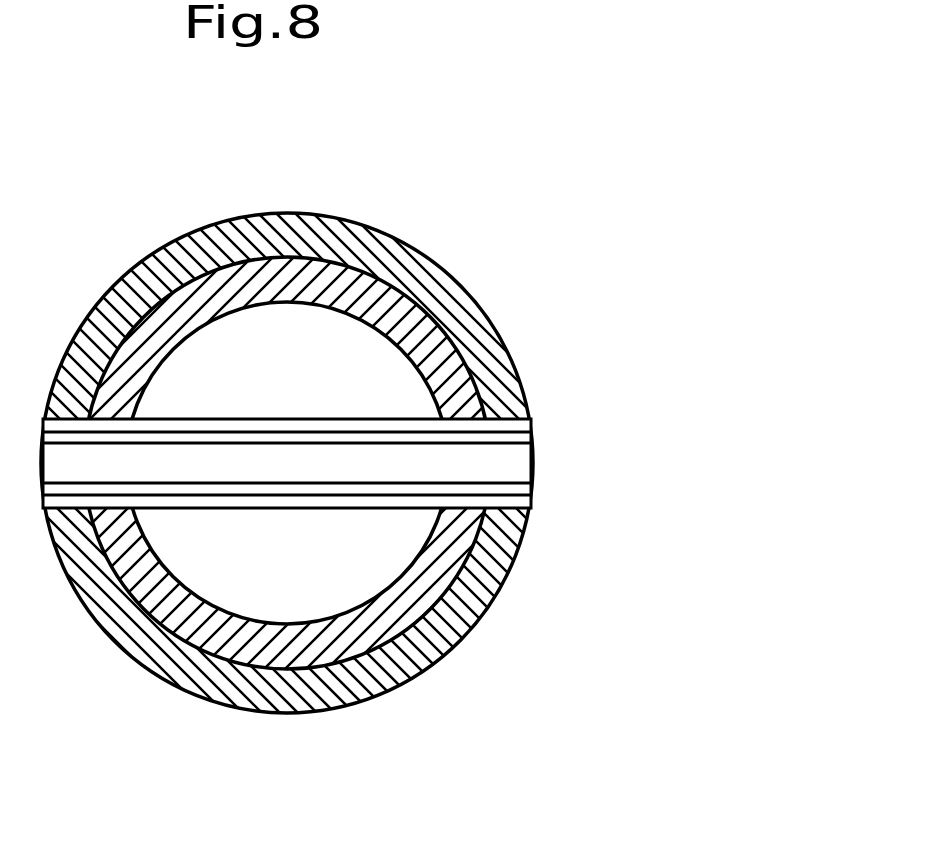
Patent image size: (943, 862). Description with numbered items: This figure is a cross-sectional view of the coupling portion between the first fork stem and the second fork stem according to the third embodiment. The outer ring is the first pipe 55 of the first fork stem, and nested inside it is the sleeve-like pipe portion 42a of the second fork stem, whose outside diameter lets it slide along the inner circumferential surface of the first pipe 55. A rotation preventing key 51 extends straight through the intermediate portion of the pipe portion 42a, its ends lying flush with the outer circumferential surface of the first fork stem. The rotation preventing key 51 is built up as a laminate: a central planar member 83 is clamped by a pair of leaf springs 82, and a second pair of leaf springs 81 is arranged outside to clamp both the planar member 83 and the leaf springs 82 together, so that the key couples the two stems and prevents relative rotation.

The first pipe 55 is at (345, 237).
The pipe portion 42a is at (430, 310).
The rotation preventing key 51 is at (733, 315).
The leaf springs 81 is at (527, 400).
The leaf springs 82 is at (513, 438).
The planar member 83 is at (507, 463).